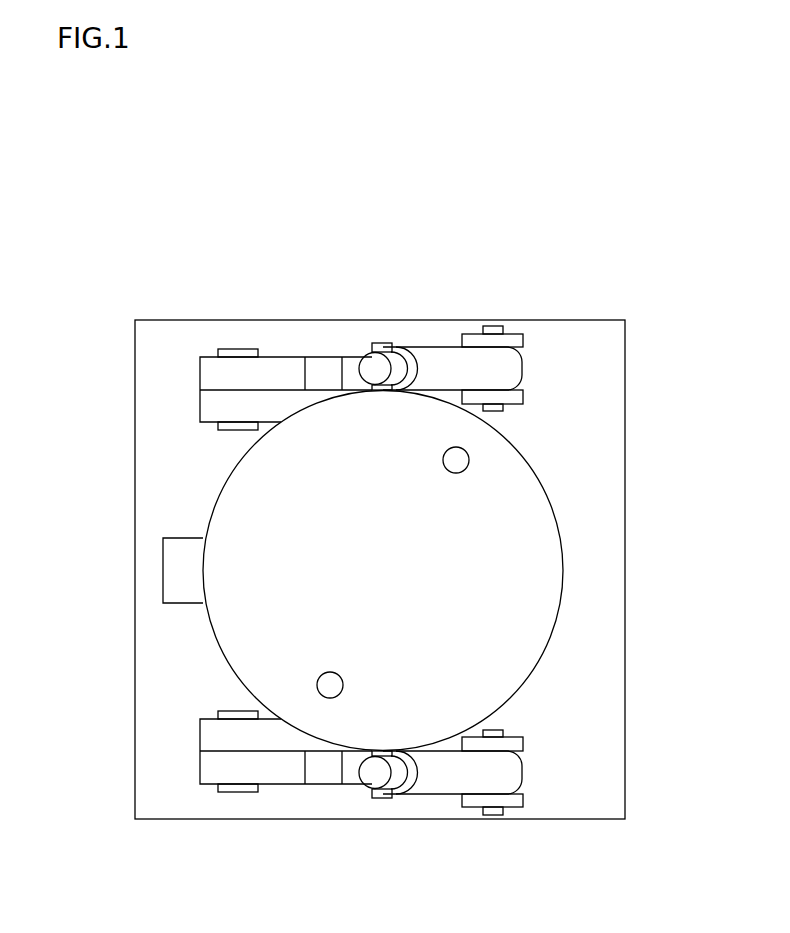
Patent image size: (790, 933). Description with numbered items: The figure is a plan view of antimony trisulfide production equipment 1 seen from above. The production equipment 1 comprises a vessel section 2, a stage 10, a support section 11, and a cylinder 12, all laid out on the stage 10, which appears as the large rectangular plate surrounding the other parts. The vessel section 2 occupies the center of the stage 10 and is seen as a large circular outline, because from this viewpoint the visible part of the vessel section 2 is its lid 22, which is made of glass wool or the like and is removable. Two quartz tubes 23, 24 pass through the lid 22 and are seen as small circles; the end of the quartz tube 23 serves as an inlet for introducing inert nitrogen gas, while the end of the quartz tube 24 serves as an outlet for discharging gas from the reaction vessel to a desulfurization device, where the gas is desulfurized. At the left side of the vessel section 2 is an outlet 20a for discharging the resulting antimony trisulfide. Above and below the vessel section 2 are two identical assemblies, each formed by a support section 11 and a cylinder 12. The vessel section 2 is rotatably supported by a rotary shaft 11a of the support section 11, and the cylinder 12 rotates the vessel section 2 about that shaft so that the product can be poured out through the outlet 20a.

The production equipment 1 is at (392, 125).
The vessel section 2 is at (556, 500).
The stage 10 is at (604, 575).
The support section 11 is at (283, 357).
The rotary shaft 11a is at (237, 349).
The cylinder 12 is at (433, 347).
The outlet 20a is at (163, 572).
The lid 22 is at (393, 586).
The quartz tube 23 is at (466, 452).
The quartz tube 24 is at (320, 676).